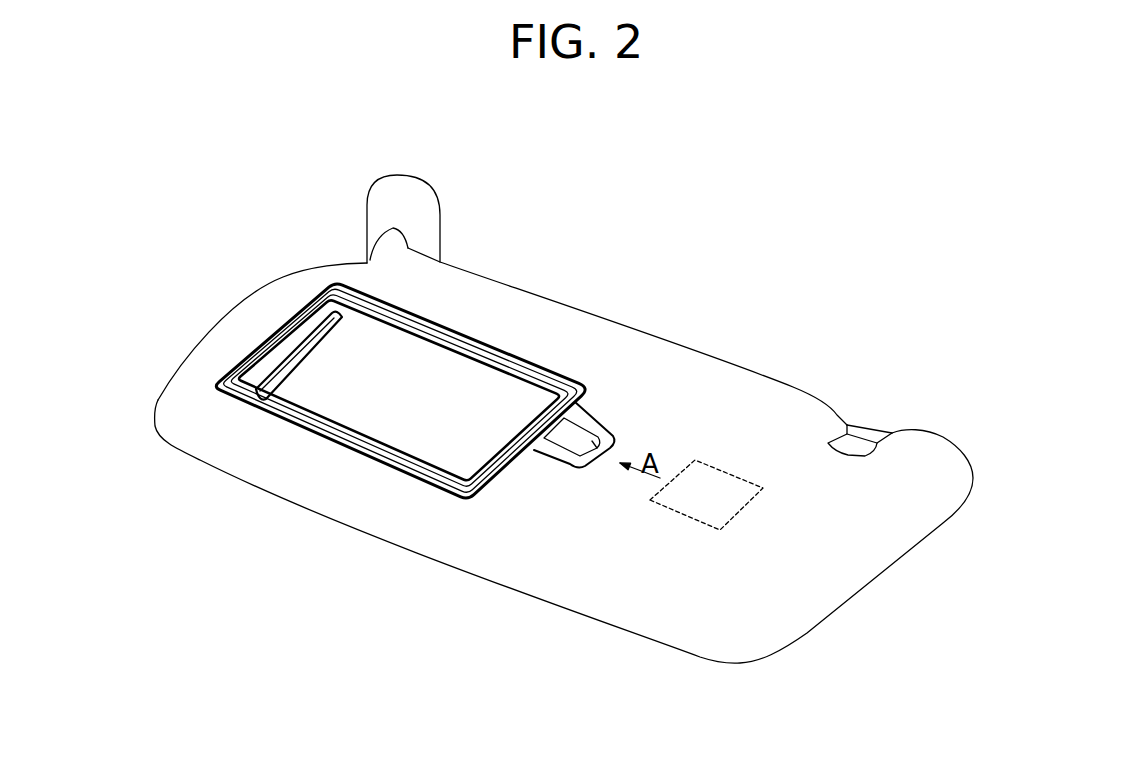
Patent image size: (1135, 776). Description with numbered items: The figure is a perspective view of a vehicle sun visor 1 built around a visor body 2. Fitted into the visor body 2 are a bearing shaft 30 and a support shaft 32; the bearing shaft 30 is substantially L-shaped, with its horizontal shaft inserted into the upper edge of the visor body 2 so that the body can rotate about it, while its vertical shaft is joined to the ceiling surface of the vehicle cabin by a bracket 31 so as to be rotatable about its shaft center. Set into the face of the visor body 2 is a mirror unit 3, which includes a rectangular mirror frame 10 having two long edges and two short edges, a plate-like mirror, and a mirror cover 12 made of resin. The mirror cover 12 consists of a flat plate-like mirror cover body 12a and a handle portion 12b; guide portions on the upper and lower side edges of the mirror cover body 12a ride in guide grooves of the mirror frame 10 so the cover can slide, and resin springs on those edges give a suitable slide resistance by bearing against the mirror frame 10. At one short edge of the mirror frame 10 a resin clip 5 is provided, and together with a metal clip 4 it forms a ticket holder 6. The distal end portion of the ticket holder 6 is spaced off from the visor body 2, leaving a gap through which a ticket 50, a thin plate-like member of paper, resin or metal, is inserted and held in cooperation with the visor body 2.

The vehicle sun visor 1 is at (615, 300).
The visor body 2 is at (850, 548).
The mirror unit 3 is at (345, 462).
The metal clip 4 is at (563, 448).
The resin clip 5 is at (522, 449).
The ticket holder 6 is at (598, 415).
The mirror frame 10 is at (486, 334).
The mirror cover 12 is at (415, 373).
The mirror cover body 12a is at (498, 398).
The handle portion 12b is at (297, 342).
The bearing shaft 30 is at (383, 245).
The bracket 31 is at (397, 200).
The support shaft 32 is at (862, 432).
The ticket 50 is at (685, 517).